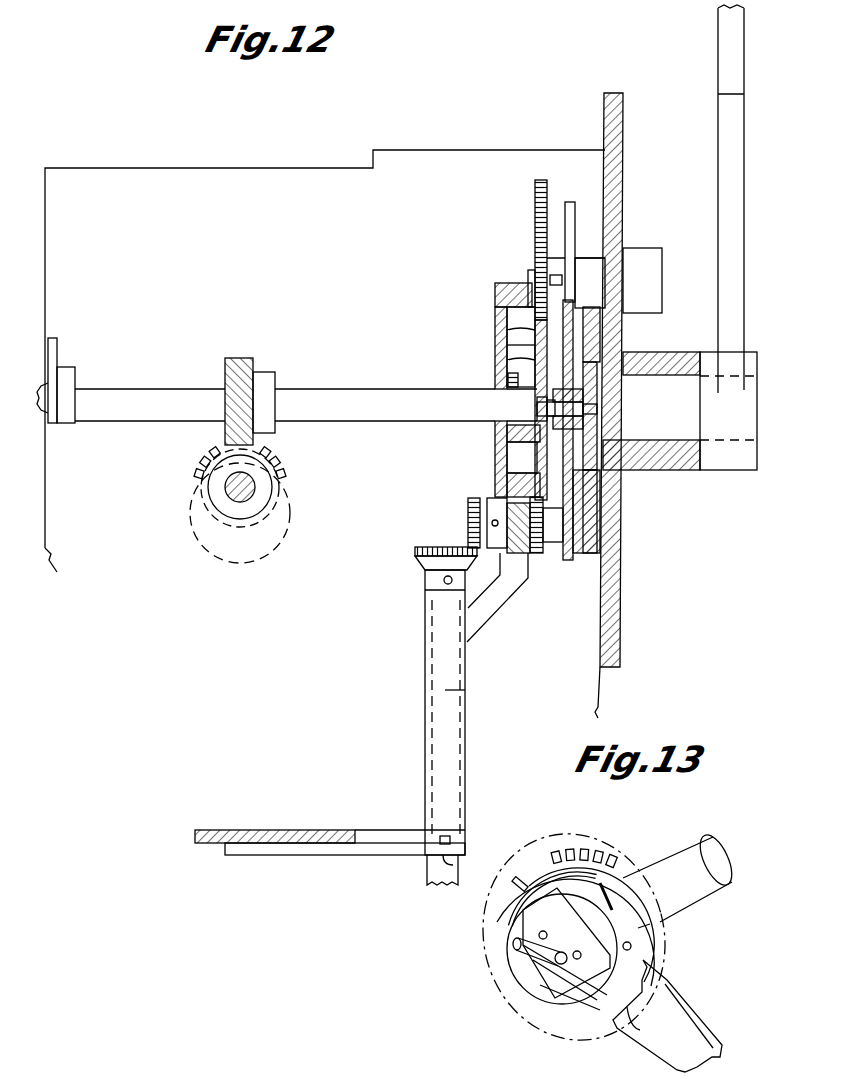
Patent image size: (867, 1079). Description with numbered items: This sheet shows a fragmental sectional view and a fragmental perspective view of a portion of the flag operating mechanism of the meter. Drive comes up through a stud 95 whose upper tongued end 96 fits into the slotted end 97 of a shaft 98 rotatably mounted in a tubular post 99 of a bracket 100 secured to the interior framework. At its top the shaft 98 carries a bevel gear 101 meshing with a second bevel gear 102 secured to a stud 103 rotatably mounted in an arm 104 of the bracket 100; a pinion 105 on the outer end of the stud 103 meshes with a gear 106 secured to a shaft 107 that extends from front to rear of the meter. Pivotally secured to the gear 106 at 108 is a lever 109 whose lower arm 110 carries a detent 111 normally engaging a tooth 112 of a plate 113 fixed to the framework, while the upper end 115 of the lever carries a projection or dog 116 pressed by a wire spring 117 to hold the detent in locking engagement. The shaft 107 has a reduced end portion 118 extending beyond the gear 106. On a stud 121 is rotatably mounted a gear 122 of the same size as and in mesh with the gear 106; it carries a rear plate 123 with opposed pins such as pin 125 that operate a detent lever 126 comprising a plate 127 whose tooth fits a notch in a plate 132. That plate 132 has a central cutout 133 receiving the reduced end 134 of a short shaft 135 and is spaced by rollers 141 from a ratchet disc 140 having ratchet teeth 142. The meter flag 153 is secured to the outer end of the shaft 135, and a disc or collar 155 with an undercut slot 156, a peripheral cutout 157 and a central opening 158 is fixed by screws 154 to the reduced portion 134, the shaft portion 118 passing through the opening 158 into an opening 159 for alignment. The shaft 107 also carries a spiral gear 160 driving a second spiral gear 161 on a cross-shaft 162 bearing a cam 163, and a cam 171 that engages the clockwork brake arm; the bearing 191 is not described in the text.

In FIG. 12, the stud 95 is at (427, 882).
In FIG. 12, the upper tongued end 96 is at (455, 866).
In FIG. 12, the slotted end 97 is at (452, 838).
In FIG. 12, the shaft 98 is at (460, 690).
In FIG. 12, the tubular post 99 is at (424, 733).
In FIG. 12, the bracket 100 is at (385, 845).
In FIG. 12, the bevel gear 101 is at (418, 565).
In FIG. 12, the second bevel gear 102 is at (473, 497).
In FIG. 12, the stud 103 is at (532, 556).
In FIG. 12, the arm 104 is at (506, 600).
In FIG. 12, the pinion 105 is at (548, 555).
In FIG. 12, the gear 106 is at (508, 345).
In FIG. 13, the gear 106 is at (623, 868).
In FIG. 12, the shaft 107 is at (403, 422).
In FIG. 13, the shaft 107 is at (706, 880).
In FIG. 13, the pivot 108 is at (632, 947).
In FIG. 13, the lever 109 is at (646, 927).
In FIG. 13, the lower arm 110 is at (649, 1023).
In FIG. 13, the detent 111 is at (620, 1032).
In FIG. 13, the tooth 112 is at (668, 976).
In FIG. 13, the plate 113 is at (692, 1022).
In FIG. 12, the upper end 115 is at (497, 300).
In FIG. 13, the upper end 115 is at (614, 915).
In FIG. 12, the projection or dog 116 is at (508, 350).
In FIG. 13, the projection or dog 116 is at (562, 946).
In FIG. 12, the wire spring 117 is at (497, 322).
In FIG. 13, the wire spring 117 is at (551, 874).
In FIG. 12, the reduced end portion 118 is at (584, 406).
In FIG. 13, the reduced end portion 118 is at (548, 975).
In FIG. 12, the stud or short shaft 121 is at (528, 275).
In FIG. 12, the gear 122 is at (535, 191).
In FIG. 12, the rear plate 123 is at (575, 226).
In FIG. 12, the pin 125 is at (556, 275).
In FIG. 12, the detent lever 126 is at (619, 180).
In FIG. 12, the plate 127 is at (598, 440).
In FIG. 12, the plate 132 is at (600, 530).
In FIG. 12, the central cutout 133 is at (590, 382).
In FIG. 12, the reduced end 134 is at (590, 420).
In FIG. 12, the short shaft 135 is at (685, 425).
In FIG. 12, the disc or plate 140 is at (624, 350).
In FIG. 12, the rollers 141 is at (581, 312).
In FIG. 12, the ratchet teeth 142 is at (624, 305).
In FIG. 12, the meter flag 153 is at (731, 283).
In FIG. 13, the screws 154 is at (577, 960).
In FIG. 12, the disc or collar 155 is at (508, 452).
In FIG. 13, the disc or collar 155 is at (575, 990).
In FIG. 12, the undercut slot 156 is at (537, 404).
In FIG. 13, the undercut slot 156 is at (514, 943).
In FIG. 12, the cutout 157 is at (508, 378).
In FIG. 13, the cutout 157 is at (586, 862).
In FIG. 12, the central opening 158 is at (548, 412).
In FIG. 13, the central opening 158 is at (555, 962).
In FIG. 12, the opening 159 is at (598, 408).
In FIG. 12, the spiral gear 160 is at (253, 360).
In FIG. 12, the second spiral gear 161 is at (279, 466).
In FIG. 12, the cross-shaft 162 is at (226, 487).
In FIG. 12, the cam 163 is at (272, 555).
In FIG. 12, the cam 171 is at (57, 362).
In FIG. 12, the bearing 191 is at (600, 490).